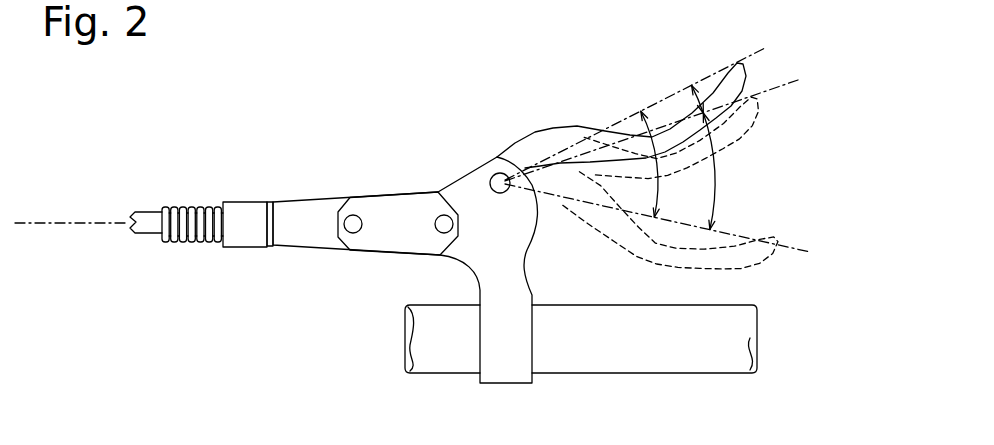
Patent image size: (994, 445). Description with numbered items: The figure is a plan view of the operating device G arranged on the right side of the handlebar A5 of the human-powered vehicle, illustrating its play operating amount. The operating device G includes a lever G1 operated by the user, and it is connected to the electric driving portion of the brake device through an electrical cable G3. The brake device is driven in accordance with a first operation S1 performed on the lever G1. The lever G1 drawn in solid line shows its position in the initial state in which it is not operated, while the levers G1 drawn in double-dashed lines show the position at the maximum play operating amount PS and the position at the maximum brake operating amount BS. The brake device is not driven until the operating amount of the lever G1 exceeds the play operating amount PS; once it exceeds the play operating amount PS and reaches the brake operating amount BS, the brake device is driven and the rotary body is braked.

The operating device G is at (346, 126).
The lever G1 is at (757, 66).
The electrical cable G3 is at (148, 237).
The handlebar A5 is at (432, 305).
The play operating amount PS is at (697, 95).
The brake operating amount BS is at (716, 178).
The first operation S1 is at (660, 185).